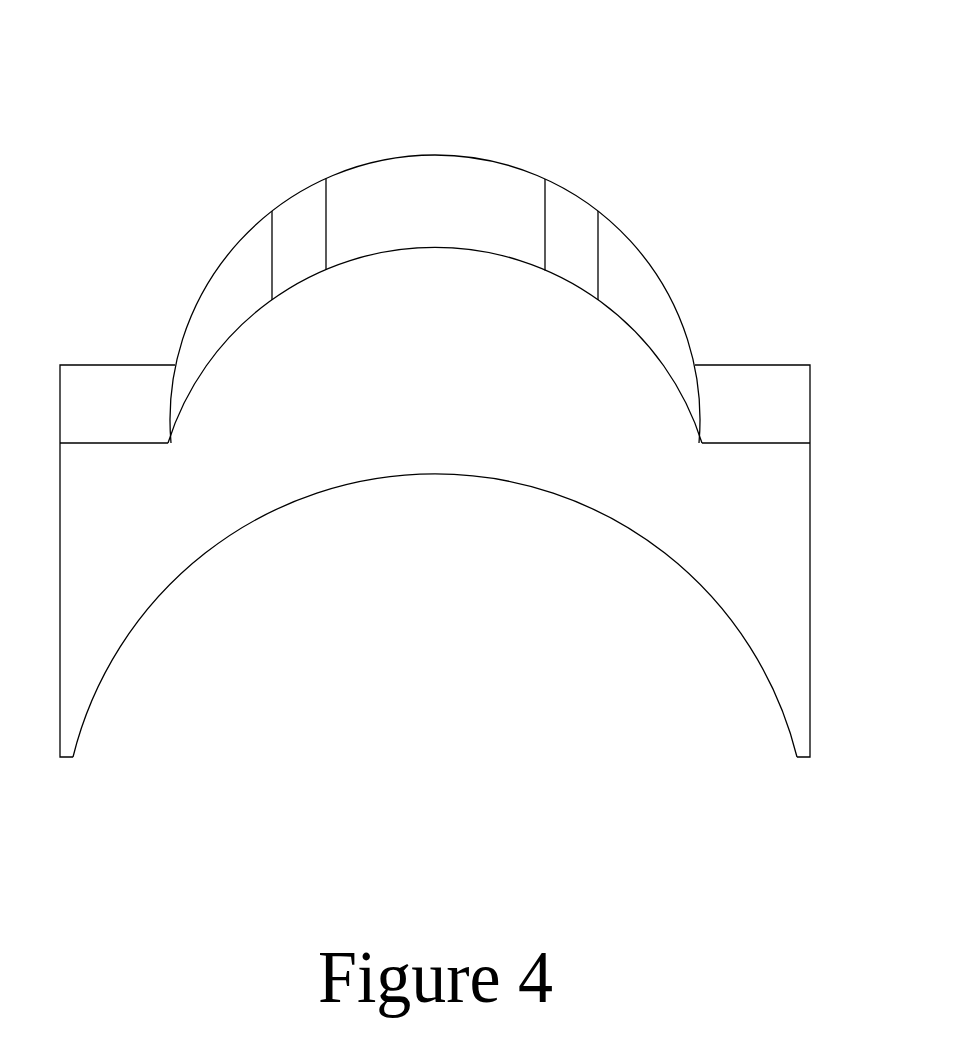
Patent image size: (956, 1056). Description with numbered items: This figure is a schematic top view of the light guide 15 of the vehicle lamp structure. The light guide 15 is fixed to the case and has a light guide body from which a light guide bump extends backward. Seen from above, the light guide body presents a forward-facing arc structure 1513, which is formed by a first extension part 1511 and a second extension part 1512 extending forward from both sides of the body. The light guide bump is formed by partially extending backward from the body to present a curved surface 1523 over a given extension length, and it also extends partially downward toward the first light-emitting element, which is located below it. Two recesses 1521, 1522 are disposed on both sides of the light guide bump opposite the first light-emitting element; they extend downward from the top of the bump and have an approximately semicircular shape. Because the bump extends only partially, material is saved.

The light guide 15 is at (450, 223).
The first extension part 1511 is at (80, 660).
The second extension part 1512 is at (773, 653).
The arc structure 1513 is at (408, 478).
The recess 1521 is at (304, 253).
The recess 1522 is at (573, 243).
The curved surface 1523 is at (483, 158).